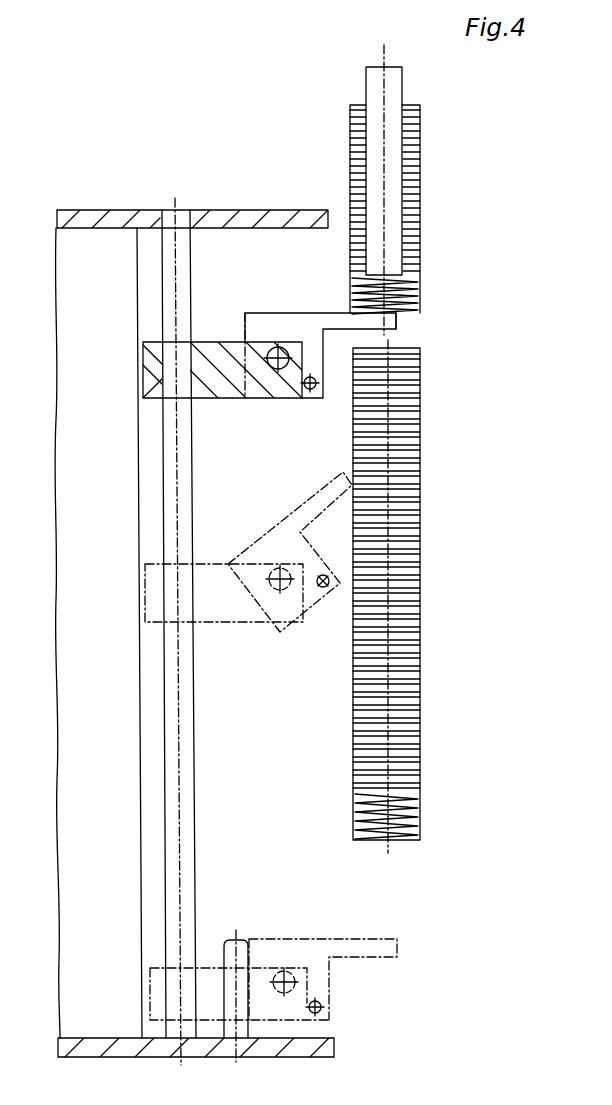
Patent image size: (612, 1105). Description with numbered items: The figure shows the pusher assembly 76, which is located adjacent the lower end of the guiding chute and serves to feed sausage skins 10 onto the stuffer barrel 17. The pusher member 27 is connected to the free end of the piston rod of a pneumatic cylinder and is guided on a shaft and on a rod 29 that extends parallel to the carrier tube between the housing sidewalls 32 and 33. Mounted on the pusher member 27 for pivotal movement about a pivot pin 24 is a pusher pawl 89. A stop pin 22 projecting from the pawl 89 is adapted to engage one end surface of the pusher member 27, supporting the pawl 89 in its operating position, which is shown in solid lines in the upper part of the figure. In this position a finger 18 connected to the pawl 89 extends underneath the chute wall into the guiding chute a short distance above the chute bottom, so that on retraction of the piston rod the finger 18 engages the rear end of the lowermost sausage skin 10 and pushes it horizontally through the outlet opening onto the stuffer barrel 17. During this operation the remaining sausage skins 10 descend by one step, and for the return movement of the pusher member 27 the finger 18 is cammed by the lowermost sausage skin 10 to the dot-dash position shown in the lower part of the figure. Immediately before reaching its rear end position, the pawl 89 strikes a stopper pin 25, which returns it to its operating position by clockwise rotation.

The sausage skin 10 is at (368, 687).
The stuffer barrel 17 is at (392, 152).
The finger 18 is at (393, 325).
The stop pin 22 is at (313, 390).
The pivot pin 24 is at (275, 372).
The stopper pin 25 is at (240, 952).
The pusher member 27 is at (148, 390).
The rod 29 is at (172, 470).
The housing sidewall 32 is at (240, 214).
The housing sidewall 33 is at (322, 1048).
The pusher assembly 76 is at (288, 184).
The pusher pawl 89 is at (258, 325).